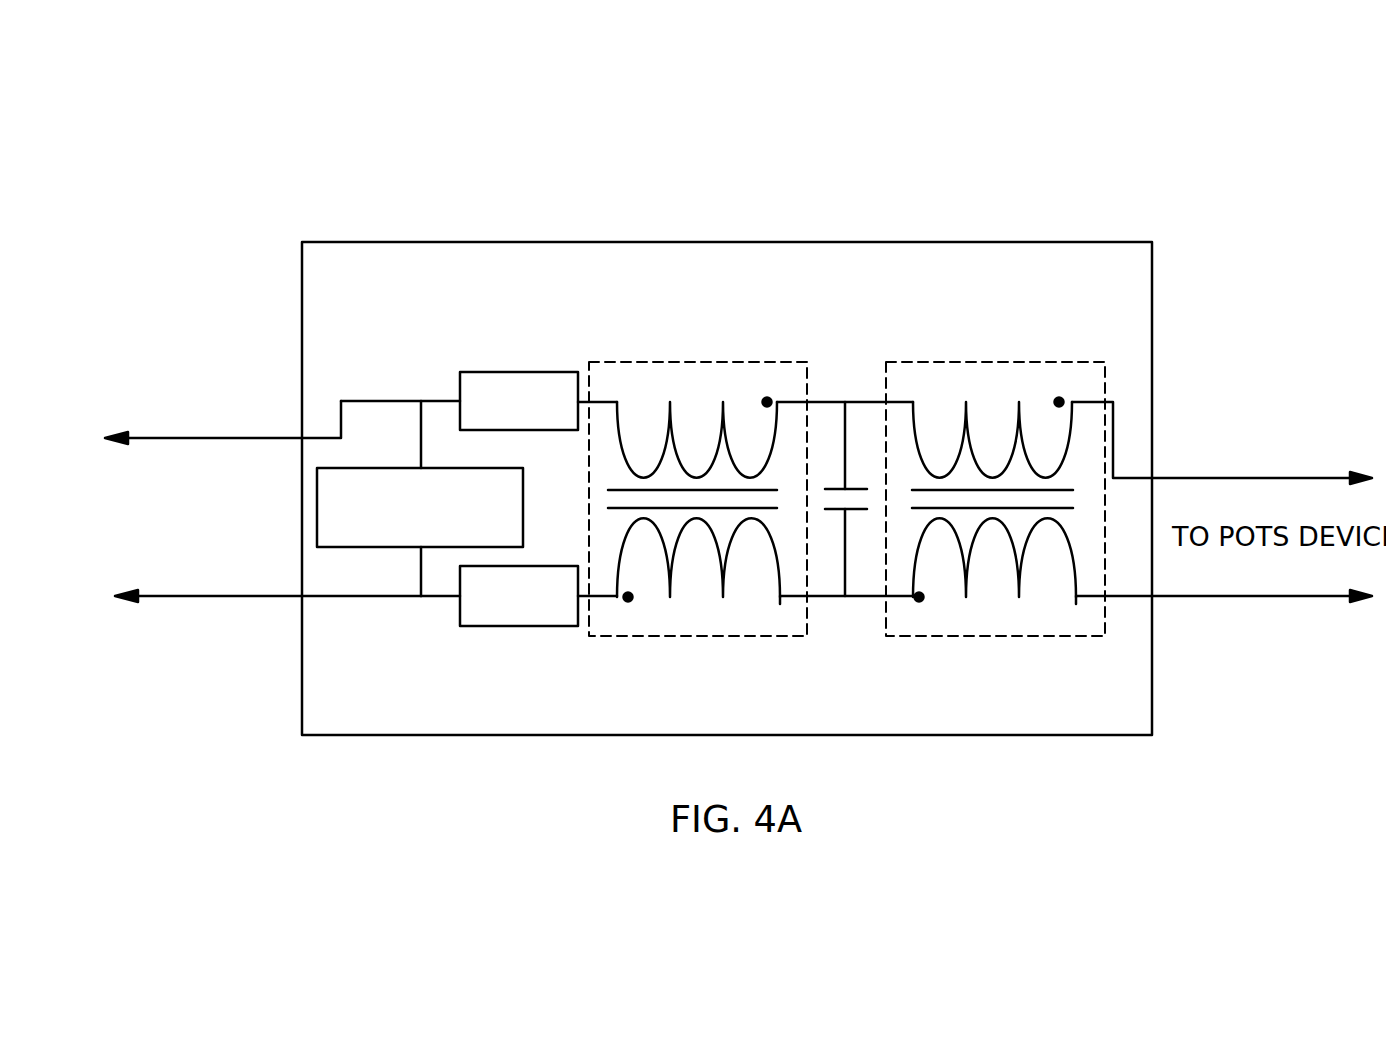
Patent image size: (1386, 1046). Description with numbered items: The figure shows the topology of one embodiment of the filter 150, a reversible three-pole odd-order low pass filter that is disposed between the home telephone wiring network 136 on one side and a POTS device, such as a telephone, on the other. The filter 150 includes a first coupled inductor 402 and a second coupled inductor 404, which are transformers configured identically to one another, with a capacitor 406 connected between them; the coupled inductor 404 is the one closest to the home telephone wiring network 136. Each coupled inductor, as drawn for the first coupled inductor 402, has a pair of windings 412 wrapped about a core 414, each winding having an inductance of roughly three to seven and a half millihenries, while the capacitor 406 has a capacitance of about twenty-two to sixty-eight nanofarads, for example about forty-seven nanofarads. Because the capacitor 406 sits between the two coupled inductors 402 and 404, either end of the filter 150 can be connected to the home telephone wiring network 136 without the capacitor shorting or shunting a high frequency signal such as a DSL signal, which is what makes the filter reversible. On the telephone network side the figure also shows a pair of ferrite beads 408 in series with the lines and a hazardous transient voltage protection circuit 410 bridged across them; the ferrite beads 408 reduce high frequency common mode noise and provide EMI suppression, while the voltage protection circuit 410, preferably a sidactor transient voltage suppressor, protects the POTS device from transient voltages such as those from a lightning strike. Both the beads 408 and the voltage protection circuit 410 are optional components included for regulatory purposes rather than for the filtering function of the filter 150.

The filter 150 is at (727, 226).
The home telephone wiring network 136 is at (246, 501).
The first coupled inductor 402 is at (996, 362).
The second coupled inductor 404 is at (697, 362).
The capacitor 406 is at (836, 489).
The ferrite beads 408 is at (520, 566).
The hazardous transient voltage protection circuit 410 is at (372, 547).
The windings 412 is at (665, 445).
The core 414 is at (780, 600).